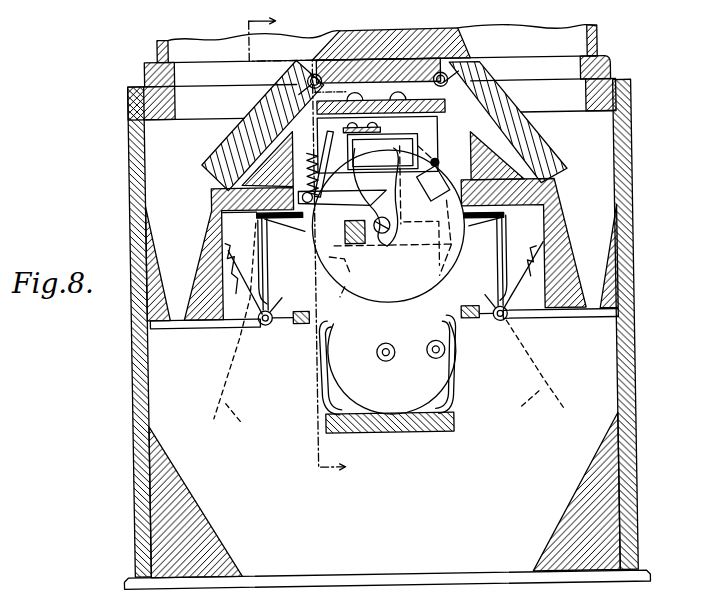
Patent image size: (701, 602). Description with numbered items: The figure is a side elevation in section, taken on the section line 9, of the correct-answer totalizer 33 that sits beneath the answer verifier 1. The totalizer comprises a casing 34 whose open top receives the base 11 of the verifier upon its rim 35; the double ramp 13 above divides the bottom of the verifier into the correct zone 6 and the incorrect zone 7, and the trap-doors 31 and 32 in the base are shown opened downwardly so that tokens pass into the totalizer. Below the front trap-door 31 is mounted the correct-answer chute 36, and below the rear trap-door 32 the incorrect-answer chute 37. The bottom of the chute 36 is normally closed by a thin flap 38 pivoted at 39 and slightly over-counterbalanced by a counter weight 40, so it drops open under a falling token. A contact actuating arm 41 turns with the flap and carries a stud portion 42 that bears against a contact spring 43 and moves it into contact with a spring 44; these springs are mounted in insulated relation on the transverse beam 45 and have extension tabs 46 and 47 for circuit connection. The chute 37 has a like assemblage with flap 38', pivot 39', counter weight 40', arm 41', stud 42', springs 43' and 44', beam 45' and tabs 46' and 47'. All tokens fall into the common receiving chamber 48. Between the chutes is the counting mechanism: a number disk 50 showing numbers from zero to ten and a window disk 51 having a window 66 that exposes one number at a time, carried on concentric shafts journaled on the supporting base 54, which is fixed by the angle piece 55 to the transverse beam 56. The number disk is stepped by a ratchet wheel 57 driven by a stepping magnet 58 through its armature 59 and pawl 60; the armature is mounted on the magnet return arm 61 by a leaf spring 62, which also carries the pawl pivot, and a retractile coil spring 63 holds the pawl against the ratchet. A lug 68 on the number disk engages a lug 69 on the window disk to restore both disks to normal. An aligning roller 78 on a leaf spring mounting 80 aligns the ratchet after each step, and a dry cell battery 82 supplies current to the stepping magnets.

The answer verifier 1 is at (144, 51).
The correct zone 6 is at (527, 33).
The incorrect zone 7 is at (382, 44).
The section line 9- 9 is at (304, 244).
The base 11 is at (603, 70).
The double ramp 13 is at (401, 43).
The trap-door 31 is at (520, 149).
The trap-door 32 is at (247, 135).
The totalizer 33 is at (644, 440).
The casing 34 is at (131, 393).
The rim 35 is at (600, 118).
The correct-answer chute 36 is at (592, 253).
The incorrect-answer chute 37 is at (165, 219).
The flap 38 is at (561, 363).
The flap 38' is at (209, 377).
The pivot 39 is at (519, 306).
The pivot 39' is at (239, 305).
The counter weight 40 is at (475, 326).
The counter weight 40' is at (292, 329).
The contact actuating arm 41 is at (483, 303).
The contact actuating arm 41' is at (277, 340).
The stud portion 42 is at (481, 285).
The stud portion 42' is at (291, 296).
The contact spring 43 is at (473, 259).
The contact spring 43' is at (283, 263).
The contact spring 44 is at (532, 310).
The contact spring 44' is at (240, 319).
The transverse beam 45 is at (525, 240).
The transverse beam 45' is at (225, 252).
The extension tab 46 is at (485, 231).
The extension tab 46' is at (285, 240).
The extension tab 47 is at (481, 236).
The extension tab 47' is at (280, 230).
The receiving chamber 48 is at (386, 545).
The number disk 50 is at (340, 283).
The window disk 51 is at (392, 303).
The supporting base 54 is at (348, 241).
The angle piece 55 is at (428, 154).
The transverse beam 56 is at (452, 112).
The ratchet wheel 57 is at (360, 207).
The stepping magnet 58 is at (400, 143).
The armature 59 is at (306, 169).
The pawl 60 is at (343, 232).
The magnet return arm 61 is at (410, 141).
The leaf spring 62 is at (316, 159).
The retractile coil spring 63 is at (300, 169).
The window 66 is at (446, 196).
The lug 68 is at (441, 167).
The lug 69 is at (422, 290).
The aligning roller 78 is at (345, 271).
The leaf spring mounting 80 is at (363, 306).
The dry cell battery 82 is at (430, 386).